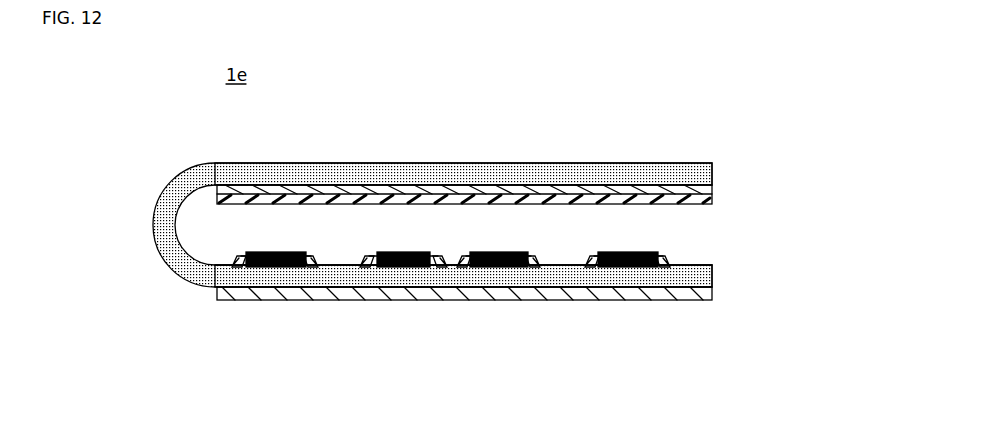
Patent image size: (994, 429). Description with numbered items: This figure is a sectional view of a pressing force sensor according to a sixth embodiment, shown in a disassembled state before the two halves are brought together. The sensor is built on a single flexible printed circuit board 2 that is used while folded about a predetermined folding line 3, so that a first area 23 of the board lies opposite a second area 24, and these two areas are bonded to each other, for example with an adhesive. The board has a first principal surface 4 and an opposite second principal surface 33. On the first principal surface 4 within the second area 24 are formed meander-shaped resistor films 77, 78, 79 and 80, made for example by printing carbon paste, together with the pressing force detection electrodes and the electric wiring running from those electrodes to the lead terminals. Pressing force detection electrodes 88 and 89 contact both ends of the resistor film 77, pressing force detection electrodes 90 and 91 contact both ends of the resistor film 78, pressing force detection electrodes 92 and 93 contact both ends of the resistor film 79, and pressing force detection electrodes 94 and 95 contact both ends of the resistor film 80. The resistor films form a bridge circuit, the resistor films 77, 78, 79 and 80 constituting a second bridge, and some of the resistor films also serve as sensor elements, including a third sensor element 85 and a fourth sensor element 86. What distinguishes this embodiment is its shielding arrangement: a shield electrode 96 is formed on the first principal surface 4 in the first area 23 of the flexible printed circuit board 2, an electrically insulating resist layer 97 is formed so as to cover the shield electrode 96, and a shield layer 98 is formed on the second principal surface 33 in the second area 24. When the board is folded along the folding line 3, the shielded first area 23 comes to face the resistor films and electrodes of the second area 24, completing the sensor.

The flexible printed circuit board 2 is at (462, 215).
The folding line 3 is at (155, 221).
The first principal surface 4 is at (563, 265).
The first area 23 is at (712, 170).
The second area 24 is at (504, 272).
The second principal surface 33 is at (455, 163).
The resistor film 77 is at (275, 253).
The resistor film 78 is at (627, 252).
The resistor film 79 is at (407, 252).
The resistor film 80 is at (495, 252).
The third sensor element 85 is at (243, 249).
The fourth sensor element 86 is at (648, 249).
The pressing force detection electrode 88 is at (232, 267).
The pressing force detection electrode 89 is at (303, 267).
The pressing force detection electrode 90 is at (593, 267).
The pressing force detection electrode 91 is at (656, 267).
The pressing force detection electrode 92 is at (363, 267).
The pressing force detection electrode 93 is at (432, 267).
The pressing force detection electrode 94 is at (463, 267).
The pressing force detection electrode 95 is at (525, 267).
The shield electrode 96 is at (345, 200).
The resist layer 97 is at (383, 190).
The shield layer 98 is at (693, 292).